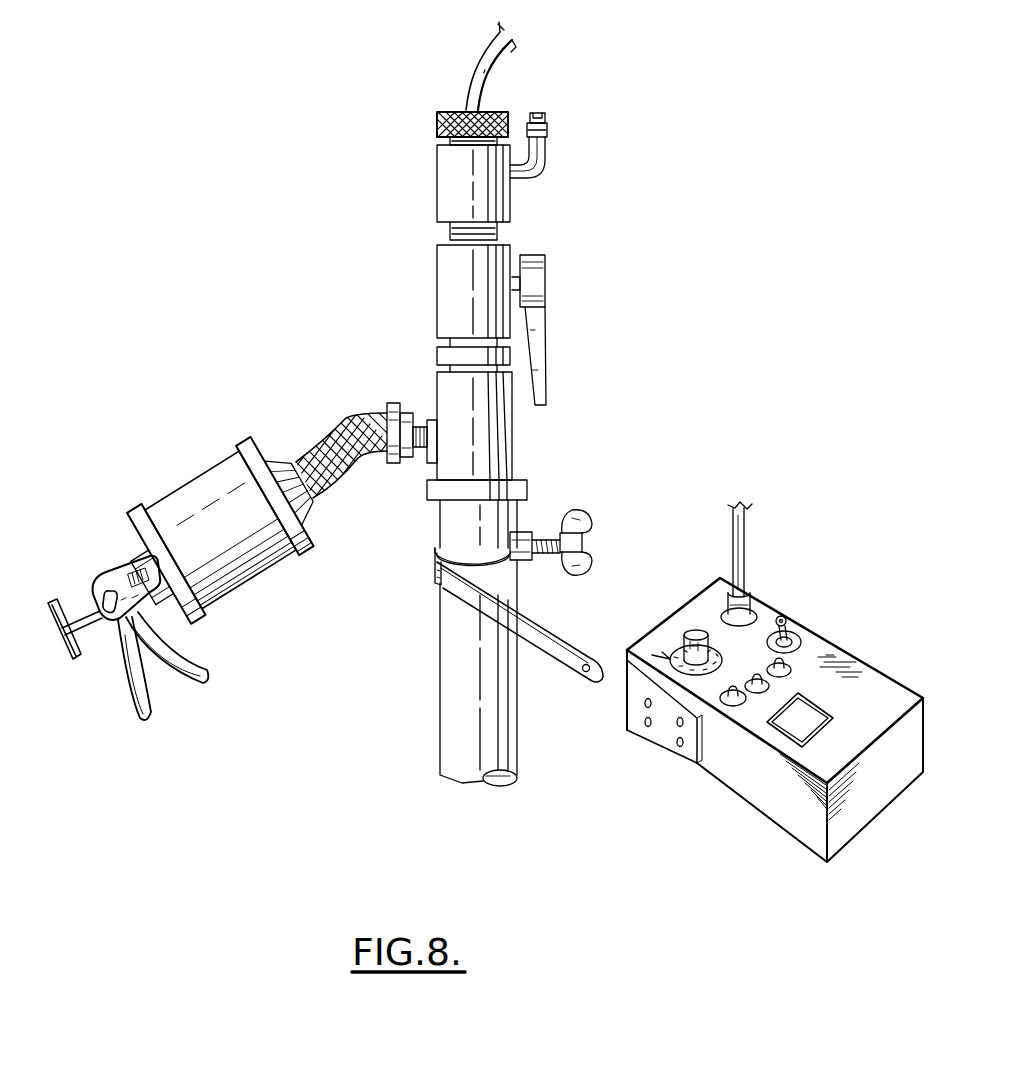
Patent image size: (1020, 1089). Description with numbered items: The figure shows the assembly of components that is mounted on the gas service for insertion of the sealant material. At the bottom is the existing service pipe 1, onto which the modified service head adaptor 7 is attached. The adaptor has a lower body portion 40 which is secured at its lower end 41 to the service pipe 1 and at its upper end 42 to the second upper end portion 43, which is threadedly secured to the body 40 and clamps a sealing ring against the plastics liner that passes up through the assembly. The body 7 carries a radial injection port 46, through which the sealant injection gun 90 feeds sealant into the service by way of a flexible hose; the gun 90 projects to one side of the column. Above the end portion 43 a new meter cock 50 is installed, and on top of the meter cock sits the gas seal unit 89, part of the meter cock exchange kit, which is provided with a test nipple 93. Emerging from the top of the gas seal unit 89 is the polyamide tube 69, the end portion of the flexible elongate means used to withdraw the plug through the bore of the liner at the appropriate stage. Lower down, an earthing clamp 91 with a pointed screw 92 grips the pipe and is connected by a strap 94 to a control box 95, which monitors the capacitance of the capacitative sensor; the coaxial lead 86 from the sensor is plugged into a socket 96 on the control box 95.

The existing service pipe 1 is at (470, 708).
The service head adaptor 7 is at (482, 432).
The lower body portion 40 is at (487, 467).
The lower end 41 is at (462, 514).
The upper end 42 is at (455, 393).
The second upper end portion 43 is at (460, 350).
The radial injection port 46 is at (420, 470).
The meter cock 50 is at (458, 272).
The polyamide tube 69 is at (516, 40).
The coaxial lead 86 is at (742, 492).
The gas seal unit 89 is at (480, 195).
The sealant injection gun 90 is at (245, 538).
The earthing clamp 91 is at (460, 575).
The pointed screw 92 is at (545, 556).
The test nipple 93 is at (540, 152).
The strap 94 is at (548, 650).
The control box 95 is at (752, 770).
The socket 96 is at (748, 595).